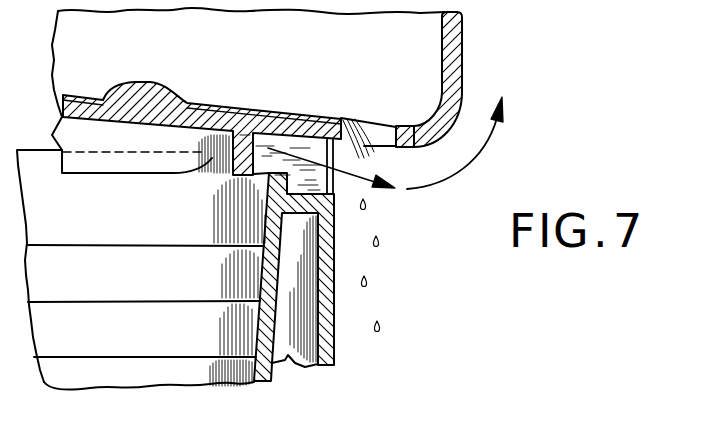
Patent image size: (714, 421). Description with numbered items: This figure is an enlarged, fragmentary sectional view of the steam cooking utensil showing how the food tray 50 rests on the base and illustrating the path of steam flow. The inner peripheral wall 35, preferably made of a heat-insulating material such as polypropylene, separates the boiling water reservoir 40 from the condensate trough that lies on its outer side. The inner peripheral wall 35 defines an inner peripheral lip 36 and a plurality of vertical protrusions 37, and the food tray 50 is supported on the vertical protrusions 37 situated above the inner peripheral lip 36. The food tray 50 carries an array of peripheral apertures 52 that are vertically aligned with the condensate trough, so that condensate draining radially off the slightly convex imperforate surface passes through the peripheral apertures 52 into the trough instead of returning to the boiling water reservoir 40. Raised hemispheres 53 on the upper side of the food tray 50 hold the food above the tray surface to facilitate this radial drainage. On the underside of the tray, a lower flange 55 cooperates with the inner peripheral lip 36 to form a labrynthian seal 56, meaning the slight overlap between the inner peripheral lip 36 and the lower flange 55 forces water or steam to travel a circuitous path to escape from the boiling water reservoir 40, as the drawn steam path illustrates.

The food tray 50 is at (462, 35).
The peripheral apertures 52 is at (382, 125).
The inner peripheral wall 35 is at (306, 128).
The raised hemispheres 53 is at (138, 86).
The lower flange 55 is at (210, 160).
The labrynthian seal 56 is at (300, 143).
The vertical protrusions 37 is at (319, 181).
The inner peripheral lip 36 is at (256, 253).
The boiling water reservoir 40 is at (141, 270).